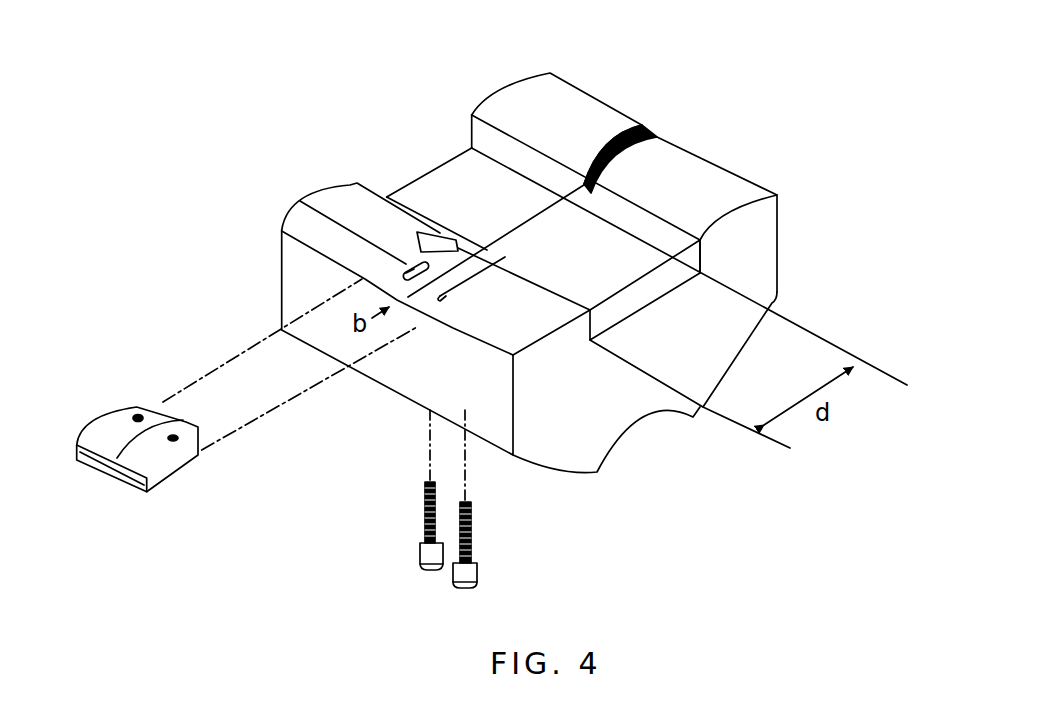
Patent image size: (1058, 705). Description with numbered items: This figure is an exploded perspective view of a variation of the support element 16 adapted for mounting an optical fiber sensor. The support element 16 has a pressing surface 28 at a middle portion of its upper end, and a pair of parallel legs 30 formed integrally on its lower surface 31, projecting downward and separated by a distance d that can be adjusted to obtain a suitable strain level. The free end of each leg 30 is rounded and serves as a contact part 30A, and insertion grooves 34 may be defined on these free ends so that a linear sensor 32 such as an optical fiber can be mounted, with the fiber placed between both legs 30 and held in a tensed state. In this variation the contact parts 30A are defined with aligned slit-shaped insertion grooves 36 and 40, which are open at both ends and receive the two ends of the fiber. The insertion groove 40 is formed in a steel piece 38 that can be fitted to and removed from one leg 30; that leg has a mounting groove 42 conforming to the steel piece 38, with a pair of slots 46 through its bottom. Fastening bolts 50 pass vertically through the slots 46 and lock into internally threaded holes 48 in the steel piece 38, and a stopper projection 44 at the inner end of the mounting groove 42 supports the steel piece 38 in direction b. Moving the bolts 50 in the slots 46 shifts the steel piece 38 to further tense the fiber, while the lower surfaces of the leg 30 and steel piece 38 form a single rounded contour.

The support element 16 is at (398, 116).
The pressing surface 28 is at (633, 430).
The legs 30 is at (742, 208).
The contact parts 30A is at (677, 167).
The lower surface 31 is at (459, 167).
The sensor 32 is at (533, 217).
The insertion grooves 34 is at (642, 124).
The insertion groove 36 is at (587, 178).
The steel piece 38 is at (128, 471).
The insertion groove 40 is at (110, 468).
The mounting groove 42 is at (395, 265).
The stopper projection 44 is at (487, 250).
The slots 46 is at (325, 220).
The internally threaded holes 48 is at (138, 416).
The fastening bolts 50 is at (474, 538).